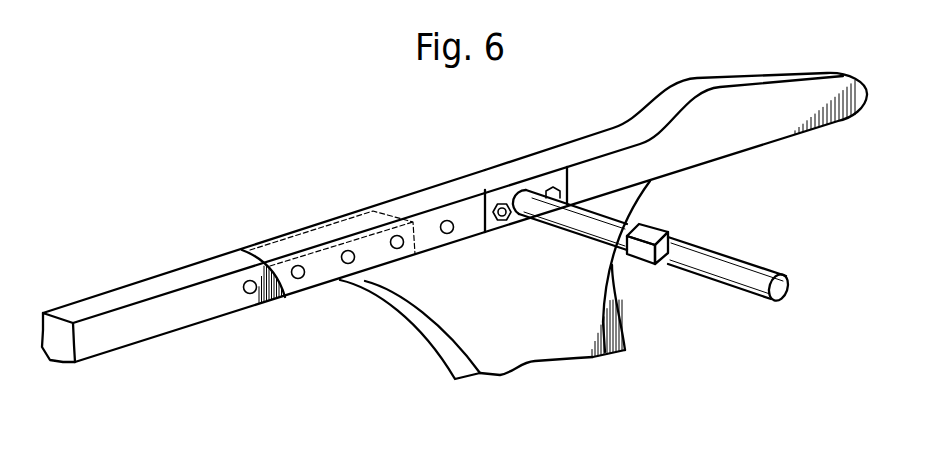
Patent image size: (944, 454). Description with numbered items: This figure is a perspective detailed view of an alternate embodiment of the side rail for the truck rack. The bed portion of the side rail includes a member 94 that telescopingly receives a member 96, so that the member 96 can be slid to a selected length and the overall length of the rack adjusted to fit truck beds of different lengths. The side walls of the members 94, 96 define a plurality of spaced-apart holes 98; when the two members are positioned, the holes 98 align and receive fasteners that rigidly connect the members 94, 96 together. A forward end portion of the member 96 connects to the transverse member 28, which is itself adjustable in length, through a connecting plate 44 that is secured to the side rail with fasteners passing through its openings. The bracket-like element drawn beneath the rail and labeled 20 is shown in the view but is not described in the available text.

The bracket 20 is at (517, 347).
The transverse member 28 is at (703, 257).
The connecting plate 44 is at (563, 178).
The member 94 is at (567, 155).
The member 96 is at (113, 297).
The spaced-apart holes 98 is at (345, 263).